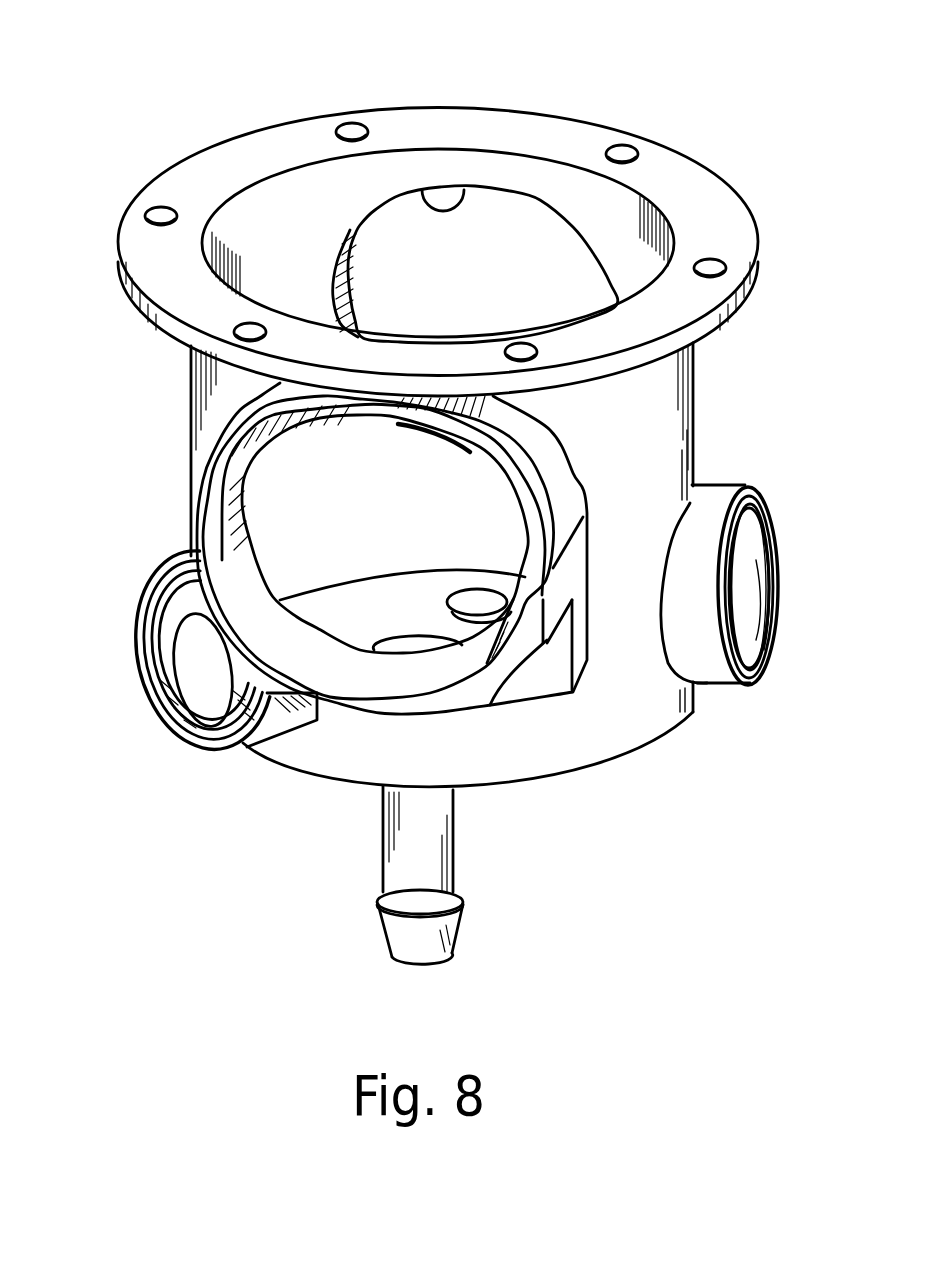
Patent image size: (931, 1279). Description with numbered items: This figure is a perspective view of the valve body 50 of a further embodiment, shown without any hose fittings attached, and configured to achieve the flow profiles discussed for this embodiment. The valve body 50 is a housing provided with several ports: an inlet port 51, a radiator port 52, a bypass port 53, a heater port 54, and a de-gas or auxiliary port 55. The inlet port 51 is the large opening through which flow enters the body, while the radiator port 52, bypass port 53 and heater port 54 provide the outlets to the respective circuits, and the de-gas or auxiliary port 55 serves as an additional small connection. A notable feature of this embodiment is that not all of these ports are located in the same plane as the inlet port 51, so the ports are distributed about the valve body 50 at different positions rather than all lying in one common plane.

The valve body 50 is at (190, 432).
The inlet port 51 is at (443, 677).
The radiator port 52 is at (423, 190).
The bypass port 53 is at (176, 712).
The heater port 54 is at (743, 483).
The de-gas or auxiliary port 55 is at (380, 853).